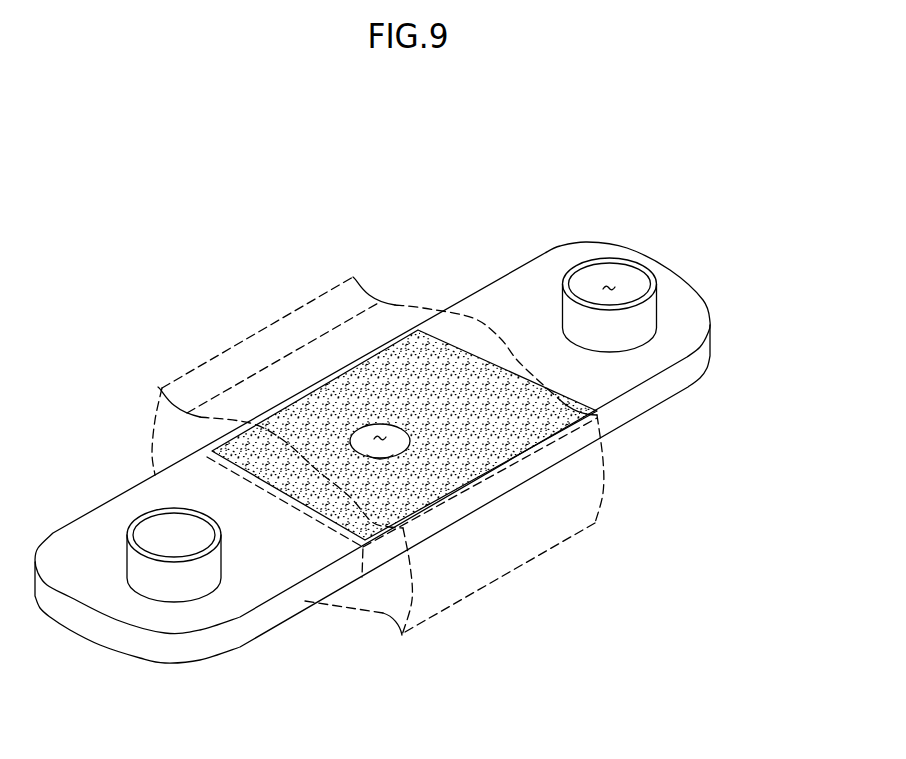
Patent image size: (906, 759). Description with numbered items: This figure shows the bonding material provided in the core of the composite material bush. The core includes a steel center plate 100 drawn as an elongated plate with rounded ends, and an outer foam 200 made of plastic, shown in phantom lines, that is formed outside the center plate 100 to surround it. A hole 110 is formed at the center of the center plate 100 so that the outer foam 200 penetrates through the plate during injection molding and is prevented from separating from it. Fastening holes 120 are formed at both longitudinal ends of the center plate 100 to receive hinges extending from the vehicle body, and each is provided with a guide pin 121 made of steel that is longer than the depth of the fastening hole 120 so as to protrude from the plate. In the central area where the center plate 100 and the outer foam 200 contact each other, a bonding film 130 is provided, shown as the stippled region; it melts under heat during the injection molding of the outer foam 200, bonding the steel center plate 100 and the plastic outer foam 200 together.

The center plate 100 is at (645, 400).
The hole 110 is at (382, 433).
The fastening hole 120 is at (610, 285).
The guide pin 121 is at (643, 315).
The bonding film 130 is at (317, 487).
The outer foam 200 is at (257, 330).